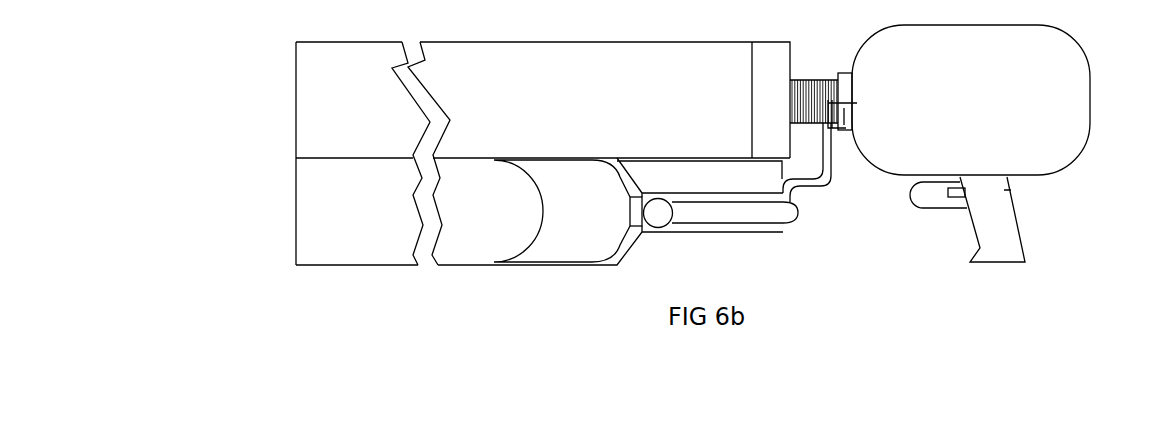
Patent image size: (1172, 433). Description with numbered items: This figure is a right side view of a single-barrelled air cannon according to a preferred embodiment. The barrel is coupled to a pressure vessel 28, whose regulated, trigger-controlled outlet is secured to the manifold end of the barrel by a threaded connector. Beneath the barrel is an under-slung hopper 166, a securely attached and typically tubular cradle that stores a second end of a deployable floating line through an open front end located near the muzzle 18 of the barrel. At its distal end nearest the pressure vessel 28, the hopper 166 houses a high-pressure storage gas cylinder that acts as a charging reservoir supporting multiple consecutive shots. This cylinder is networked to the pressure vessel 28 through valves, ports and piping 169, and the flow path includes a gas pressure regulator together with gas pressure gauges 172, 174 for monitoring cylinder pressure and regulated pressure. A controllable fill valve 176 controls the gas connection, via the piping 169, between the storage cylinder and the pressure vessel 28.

The muzzle 18 is at (517, 153).
The hopper 166 is at (539, 238).
The gas pressure gauge 172 is at (621, 255).
The gas pressure gauge 174 is at (720, 246).
The piping 169 is at (833, 223).
The controllable fill valve 176 is at (874, 183).
The pressure vessel 28 is at (1004, 143).